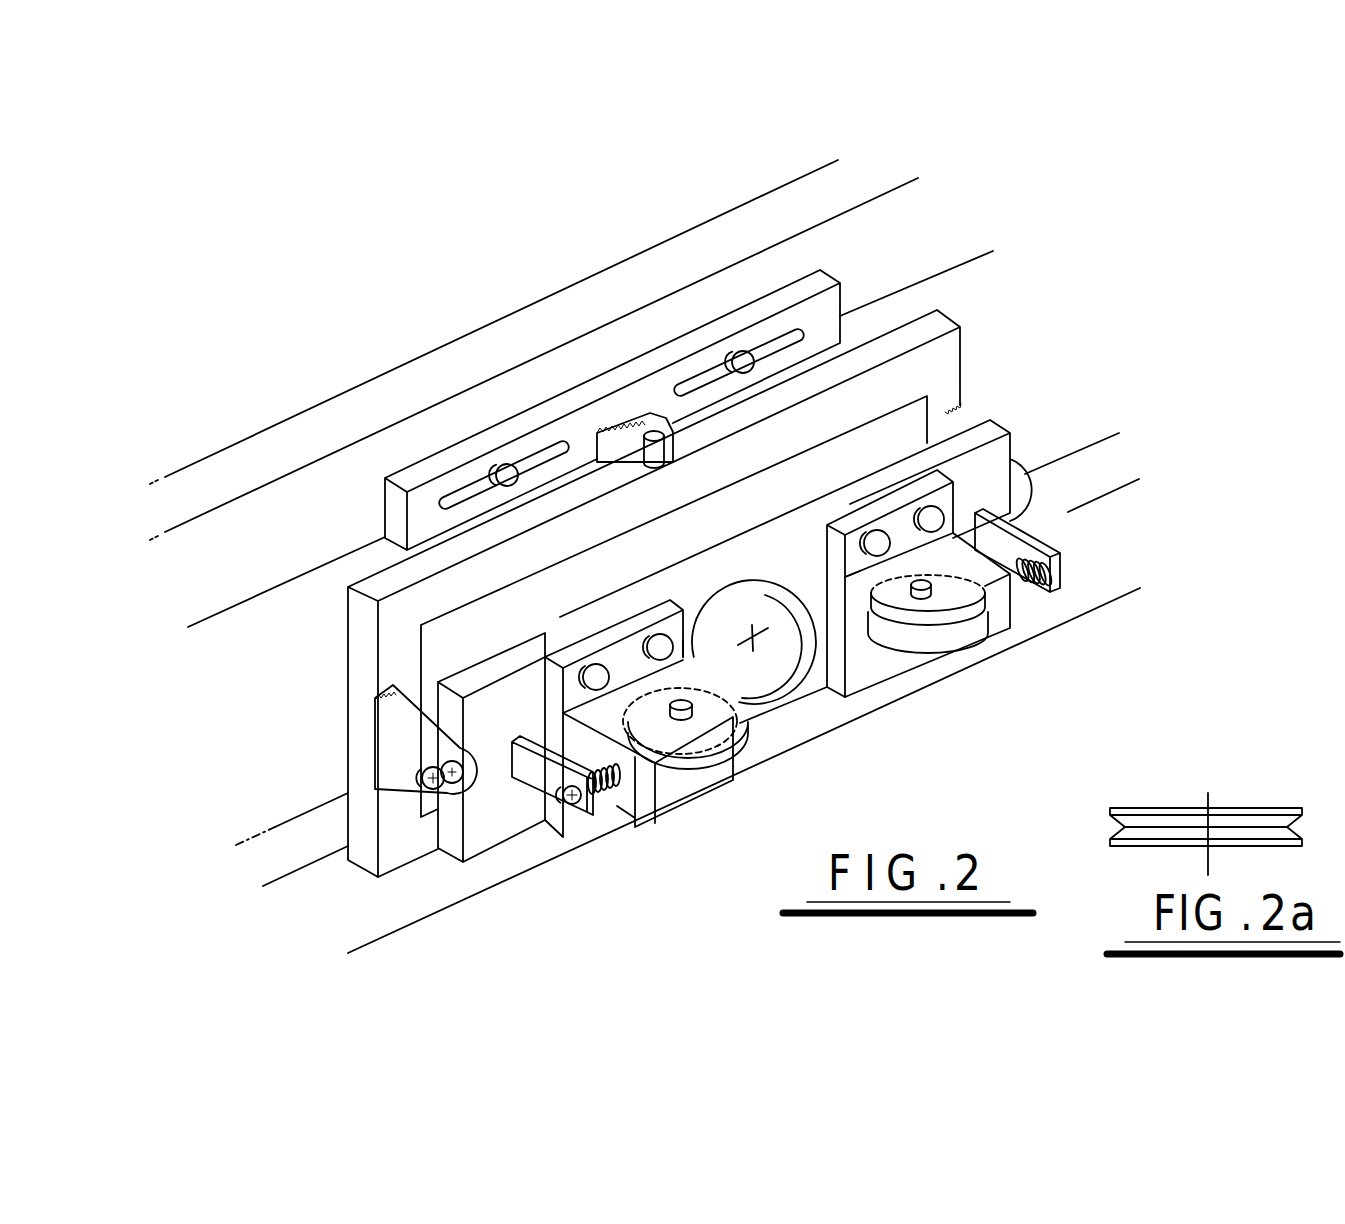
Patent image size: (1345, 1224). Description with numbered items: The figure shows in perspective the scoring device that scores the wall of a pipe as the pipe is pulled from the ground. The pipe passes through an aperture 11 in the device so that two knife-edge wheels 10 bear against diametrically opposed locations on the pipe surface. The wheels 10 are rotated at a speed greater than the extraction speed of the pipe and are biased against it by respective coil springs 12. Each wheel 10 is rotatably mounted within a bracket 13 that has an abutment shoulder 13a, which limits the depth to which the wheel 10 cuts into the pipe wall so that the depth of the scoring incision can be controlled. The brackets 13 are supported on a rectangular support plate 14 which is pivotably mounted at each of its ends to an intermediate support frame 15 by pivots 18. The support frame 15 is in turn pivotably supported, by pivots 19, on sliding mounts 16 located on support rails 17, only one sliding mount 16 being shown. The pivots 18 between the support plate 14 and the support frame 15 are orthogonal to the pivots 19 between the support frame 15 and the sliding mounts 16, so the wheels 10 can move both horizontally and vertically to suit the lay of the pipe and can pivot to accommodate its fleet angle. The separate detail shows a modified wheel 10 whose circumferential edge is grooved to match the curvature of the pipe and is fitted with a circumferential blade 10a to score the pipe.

In FIG. 2, the knife-edge wheel 10 is at (743, 745).
In FIG. 2a, the knife-edge wheel 10 is at (1237, 807).
In FIG. 2a, the circumferential blade 10a is at (1113, 830).
In FIG. 2, the aperture 11 is at (757, 658).
In FIG. 2, the coil spring 12 is at (607, 792).
In FIG. 2, the bracket 13 is at (692, 797).
In FIG. 2, the abutment shoulder 13a is at (690, 662).
In FIG. 2, the support plate 14 is at (490, 808).
In FIG. 2, the support frame 15 is at (393, 615).
In FIG. 2, the sliding mount 16 is at (557, 427).
In FIG. 2, the support rail 17 is at (330, 498).
In FIG. 2, the pivot 18 is at (430, 768).
In FIG. 2, the pivot 19 is at (652, 432).